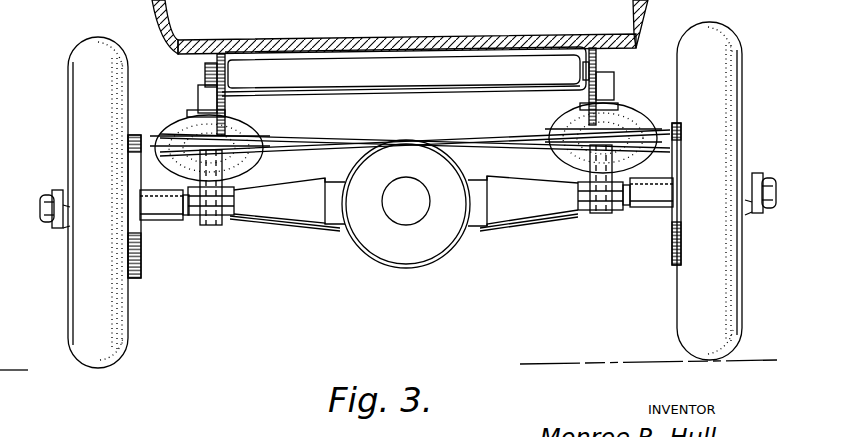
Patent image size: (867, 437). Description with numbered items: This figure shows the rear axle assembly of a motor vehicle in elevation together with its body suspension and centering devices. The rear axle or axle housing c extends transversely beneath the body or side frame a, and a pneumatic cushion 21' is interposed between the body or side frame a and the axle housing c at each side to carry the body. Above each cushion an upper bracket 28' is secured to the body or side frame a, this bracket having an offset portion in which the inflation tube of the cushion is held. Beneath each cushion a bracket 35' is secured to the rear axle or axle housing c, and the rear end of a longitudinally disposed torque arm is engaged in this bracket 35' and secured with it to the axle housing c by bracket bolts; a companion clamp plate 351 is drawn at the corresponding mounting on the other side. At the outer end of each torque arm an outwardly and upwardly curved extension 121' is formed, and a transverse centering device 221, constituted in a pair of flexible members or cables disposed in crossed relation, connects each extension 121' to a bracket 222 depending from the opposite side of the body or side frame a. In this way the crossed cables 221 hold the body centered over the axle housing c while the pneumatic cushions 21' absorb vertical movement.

The body or side frame a is at (226, 54).
The upper bracket 28' is at (396, 86).
The pneumatic cushion 21' is at (404, 132).
The bracket 222 is at (238, 131).
The centering device 221 is at (353, 139).
The left axle clamp plate 351 is at (236, 190).
The bracket 35' is at (564, 184).
The extension 121' is at (390, 204).
The rear axle or axle housing c is at (293, 222).